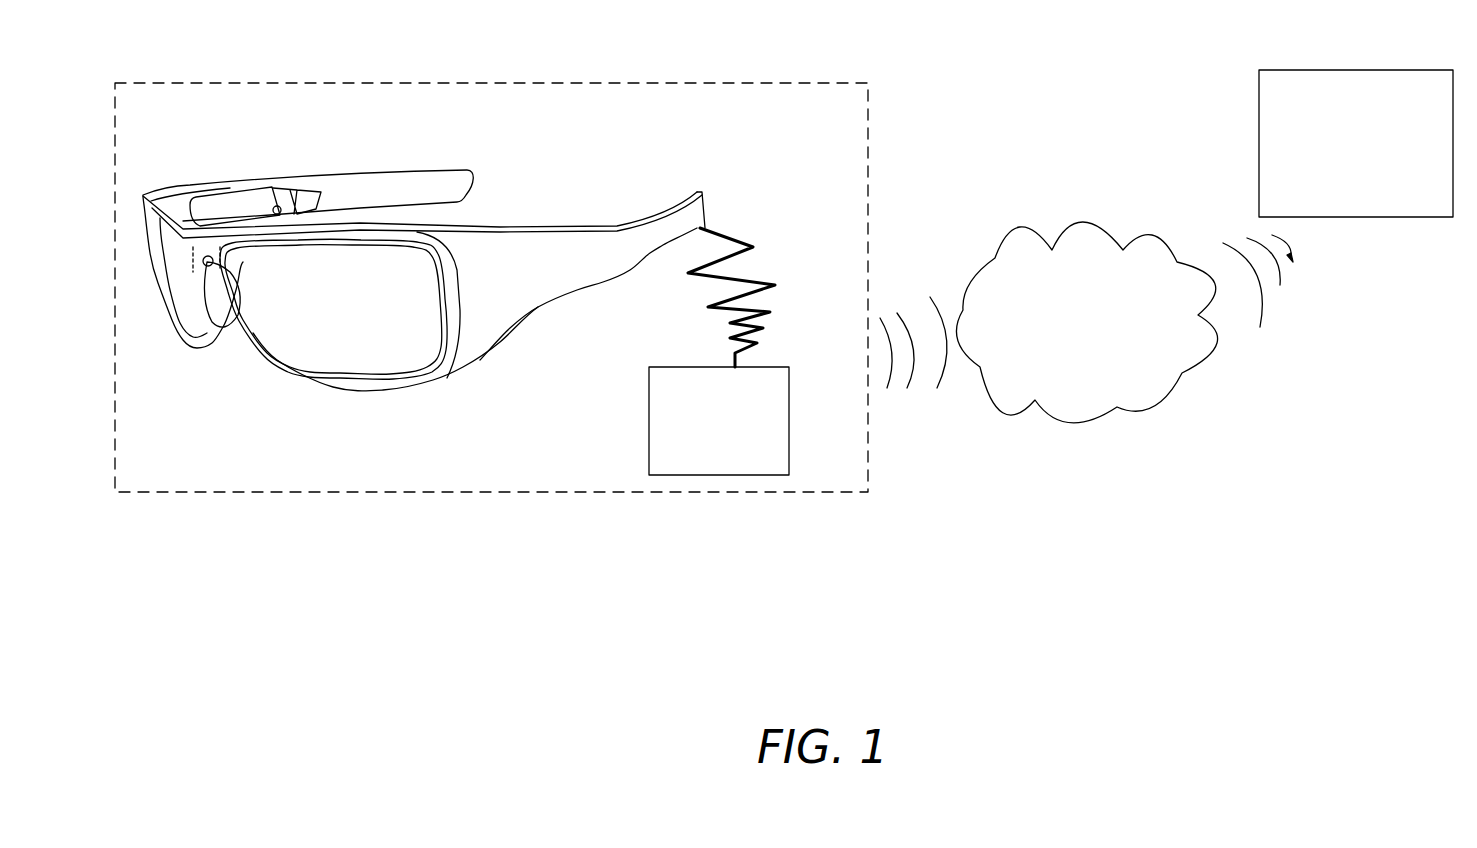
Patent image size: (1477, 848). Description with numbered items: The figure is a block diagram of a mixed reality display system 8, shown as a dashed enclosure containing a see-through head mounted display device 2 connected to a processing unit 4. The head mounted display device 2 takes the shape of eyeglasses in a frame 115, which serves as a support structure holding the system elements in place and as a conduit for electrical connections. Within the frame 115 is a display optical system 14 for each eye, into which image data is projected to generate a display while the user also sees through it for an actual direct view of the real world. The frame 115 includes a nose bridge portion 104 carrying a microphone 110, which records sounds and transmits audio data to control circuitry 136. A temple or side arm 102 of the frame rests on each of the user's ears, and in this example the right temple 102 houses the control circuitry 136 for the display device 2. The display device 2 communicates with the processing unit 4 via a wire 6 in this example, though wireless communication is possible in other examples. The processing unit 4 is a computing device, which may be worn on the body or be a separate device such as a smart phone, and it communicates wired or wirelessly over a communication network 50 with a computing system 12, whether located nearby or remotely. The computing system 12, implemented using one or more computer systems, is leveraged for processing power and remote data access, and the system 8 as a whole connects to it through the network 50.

The head mounted display device 2 is at (559, 129).
The processing unit 4 is at (719, 421).
The wire 6 is at (775, 290).
The mixed reality display system 8 is at (875, 162).
The computing system 12 is at (1356, 143).
The display optical system 14 is at (177, 277).
The communication network 50 is at (1086, 322).
The temple 102 is at (377, 190).
The nose bridge portion 104 is at (210, 230).
The microphone 110 is at (206, 268).
The frame 115 is at (482, 227).
The control circuitry 136 is at (247, 210).